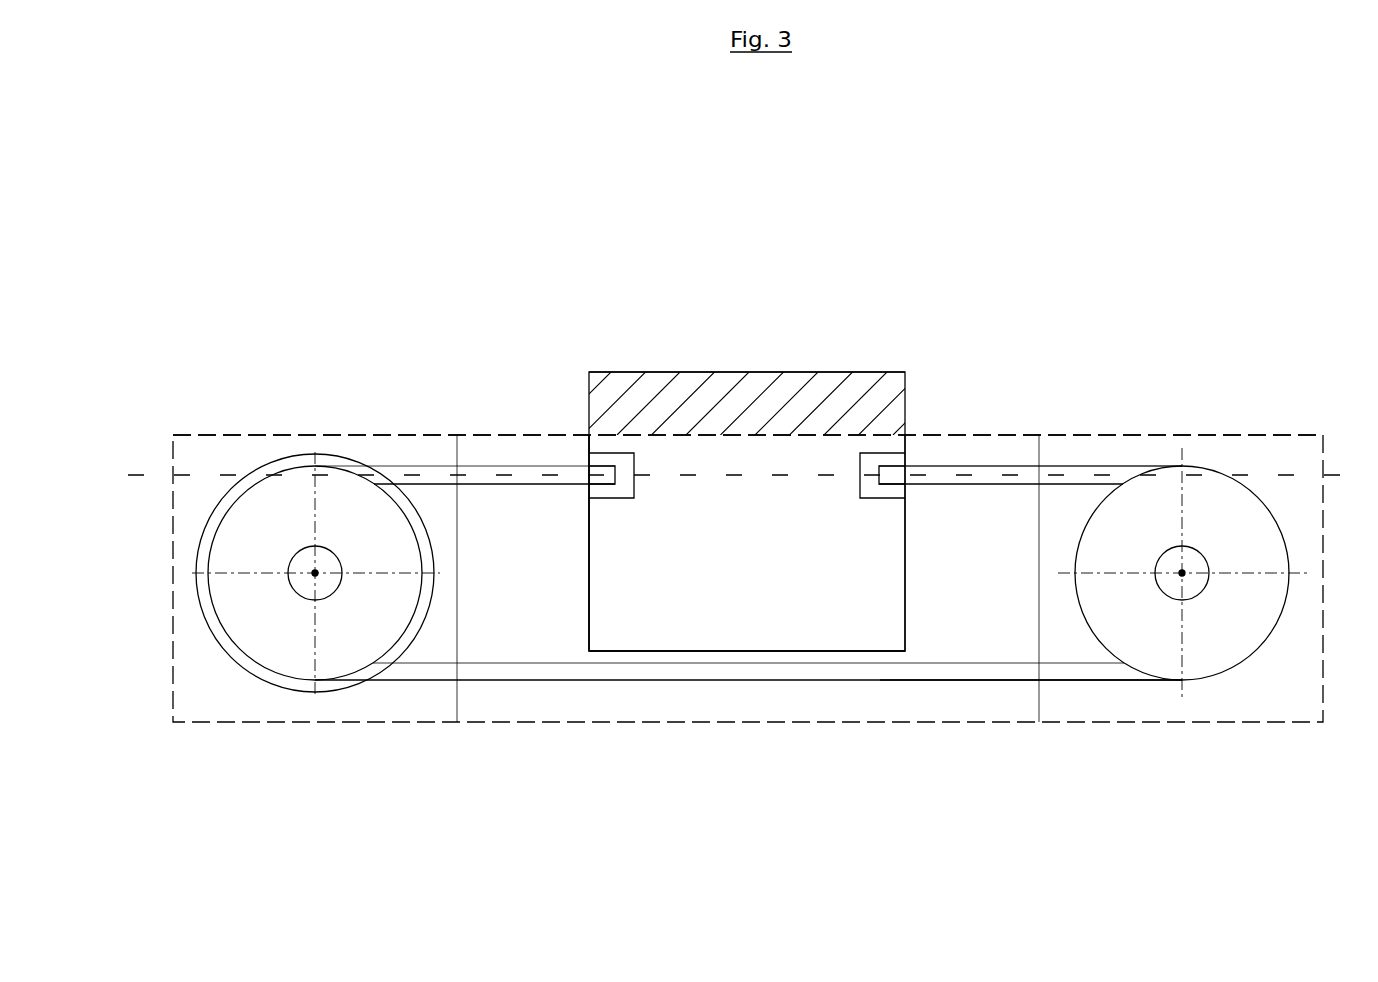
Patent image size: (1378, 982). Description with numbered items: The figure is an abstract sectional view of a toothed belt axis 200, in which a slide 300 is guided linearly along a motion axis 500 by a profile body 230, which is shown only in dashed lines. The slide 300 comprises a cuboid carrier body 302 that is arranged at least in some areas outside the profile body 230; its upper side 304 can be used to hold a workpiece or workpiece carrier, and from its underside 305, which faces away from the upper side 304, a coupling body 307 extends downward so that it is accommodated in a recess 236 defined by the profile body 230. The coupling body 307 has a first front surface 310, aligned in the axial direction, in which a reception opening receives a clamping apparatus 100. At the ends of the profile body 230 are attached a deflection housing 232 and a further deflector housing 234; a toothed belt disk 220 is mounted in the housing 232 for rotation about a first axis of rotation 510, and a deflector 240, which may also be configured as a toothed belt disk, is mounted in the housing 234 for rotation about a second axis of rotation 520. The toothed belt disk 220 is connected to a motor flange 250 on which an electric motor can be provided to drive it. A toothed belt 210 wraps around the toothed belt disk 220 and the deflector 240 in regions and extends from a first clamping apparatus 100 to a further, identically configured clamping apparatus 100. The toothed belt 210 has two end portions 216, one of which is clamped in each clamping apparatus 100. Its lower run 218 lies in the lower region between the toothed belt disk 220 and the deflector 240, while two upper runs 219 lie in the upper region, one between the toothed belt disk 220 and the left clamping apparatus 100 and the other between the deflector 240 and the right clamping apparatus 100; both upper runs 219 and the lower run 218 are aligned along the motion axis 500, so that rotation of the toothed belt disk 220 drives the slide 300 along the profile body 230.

The toothed belt axis 200 is at (310, 217).
The slide 300 is at (697, 318).
The carrier body 302 is at (858, 382).
The upper side 304 is at (795, 372).
The underside 305 is at (808, 435).
The coupling body 307 is at (672, 651).
The first front surface 310 is at (588, 563).
The motor flange 250 is at (268, 457).
The toothed belt disk 220 is at (321, 468).
The deflector 240 is at (1202, 467).
The first axis of rotation 510 is at (315, 573).
The second axis of rotation 520 is at (1182, 573).
The motion axis 500 is at (1285, 473).
The toothed belt 210 is at (947, 680).
The lower run 218 is at (483, 680).
The upper runs 219 is at (498, 470).
The end portions 216 is at (603, 498).
The clamping apparatus 100 is at (589, 460).
The recess 236 is at (972, 450).
The profile body 230 is at (740, 722).
The deflection housing 232 is at (335, 722).
The deflector housing 234 is at (1180, 722).